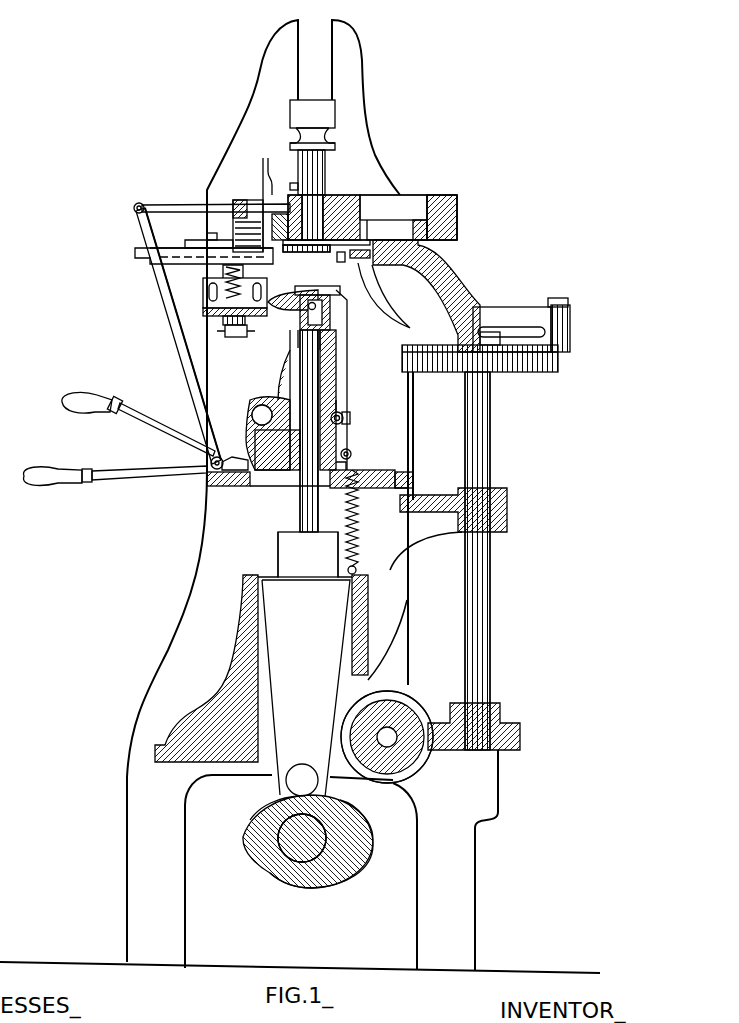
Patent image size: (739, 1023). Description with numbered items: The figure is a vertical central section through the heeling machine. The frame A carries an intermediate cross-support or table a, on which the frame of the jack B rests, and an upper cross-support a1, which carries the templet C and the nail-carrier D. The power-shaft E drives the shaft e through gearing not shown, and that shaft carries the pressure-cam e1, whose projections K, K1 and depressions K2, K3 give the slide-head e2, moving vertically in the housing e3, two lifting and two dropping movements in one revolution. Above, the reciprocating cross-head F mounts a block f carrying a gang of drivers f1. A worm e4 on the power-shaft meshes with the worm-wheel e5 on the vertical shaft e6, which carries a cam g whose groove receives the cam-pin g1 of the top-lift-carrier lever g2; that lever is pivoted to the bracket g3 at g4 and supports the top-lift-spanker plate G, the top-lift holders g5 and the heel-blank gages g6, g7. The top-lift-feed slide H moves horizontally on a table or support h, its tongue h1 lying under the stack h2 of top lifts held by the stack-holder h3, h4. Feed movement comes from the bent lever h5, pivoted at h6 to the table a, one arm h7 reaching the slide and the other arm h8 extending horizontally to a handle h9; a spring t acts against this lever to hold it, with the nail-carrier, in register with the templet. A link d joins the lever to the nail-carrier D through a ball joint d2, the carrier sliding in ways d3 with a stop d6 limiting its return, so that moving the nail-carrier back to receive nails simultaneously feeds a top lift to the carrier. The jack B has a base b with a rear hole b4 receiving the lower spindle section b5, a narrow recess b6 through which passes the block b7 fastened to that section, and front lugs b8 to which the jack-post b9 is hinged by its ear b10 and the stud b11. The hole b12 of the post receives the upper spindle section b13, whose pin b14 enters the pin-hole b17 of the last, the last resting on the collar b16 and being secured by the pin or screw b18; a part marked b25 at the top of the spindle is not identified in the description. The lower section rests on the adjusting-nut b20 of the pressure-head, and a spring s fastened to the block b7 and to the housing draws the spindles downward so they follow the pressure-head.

The frame A is at (300, 496).
The reciprocating cross-head F is at (340, 112).
The block f is at (343, 144).
The drivers f1 is at (326, 165).
The nail-carrier D is at (352, 196).
The templet C is at (330, 212).
The upper cross-support a1 is at (375, 216).
The ways d3 is at (412, 210).
The stop d6 is at (432, 212).
The ball joint d2 is at (134, 207).
The link d is at (150, 206).
The stack-holder h3 is at (233, 198).
The stack of top lifts h2 is at (263, 230).
The stack-holder h4 is at (268, 183).
The top-lift-feed slide H is at (143, 256).
The table h is at (179, 258).
The tongue h1 is at (237, 252).
The top-lift-spanker plate G is at (326, 258).
The heel-blank gage g6 is at (303, 256).
The top-lift holders g5 is at (306, 256).
The heel-blank gage g7 is at (330, 267).
The pin-hole b17 is at (351, 267).
The top-lift-carrier lever g2 is at (403, 318).
The bracket g3 is at (505, 313).
The pivot g4 is at (572, 331).
The cam g is at (517, 362).
The cam-pin g1 is at (458, 354).
The cam b25 is at (298, 296).
The pin b14 is at (312, 318).
The collar b16 is at (300, 320).
The pin or screw b18 is at (296, 330).
The upper section of jack-spindle b13 is at (334, 340).
The hole b12 is at (324, 370).
The jack B is at (345, 448).
The block b7 is at (338, 397).
The narrow recess b6 is at (343, 418).
The hole b4 is at (352, 456).
The jack-post b9 is at (286, 395).
The ear b10 is at (258, 405).
The stud b11 is at (268, 400).
The lugs b8 is at (250, 420).
The base b is at (280, 462).
The lower section of jack-spindle b5 is at (310, 508).
The adjusting-nut b20 is at (308, 554).
The spring s is at (358, 532).
The spring t is at (229, 457).
The pivot h6 is at (210, 470).
The intermediate cross-support a is at (208, 480).
The arm h8 is at (126, 476).
The handle h9 is at (35, 480).
The arm h7 is at (192, 372).
The bent lever h5 is at (185, 346).
The housing e3 is at (238, 678).
The slide-head e2 is at (313, 664).
The vertical shaft e6 is at (490, 593).
The power-shaft E is at (392, 730).
The worm e4 is at (412, 768).
The worm-wheel e5 is at (522, 736).
The projection K is at (248, 850).
The projection K1 is at (358, 822).
The depression K2 is at (257, 833).
The depression K3 is at (273, 868).
The shaft e is at (298, 843).
The pressure-cam e1 is at (345, 853).